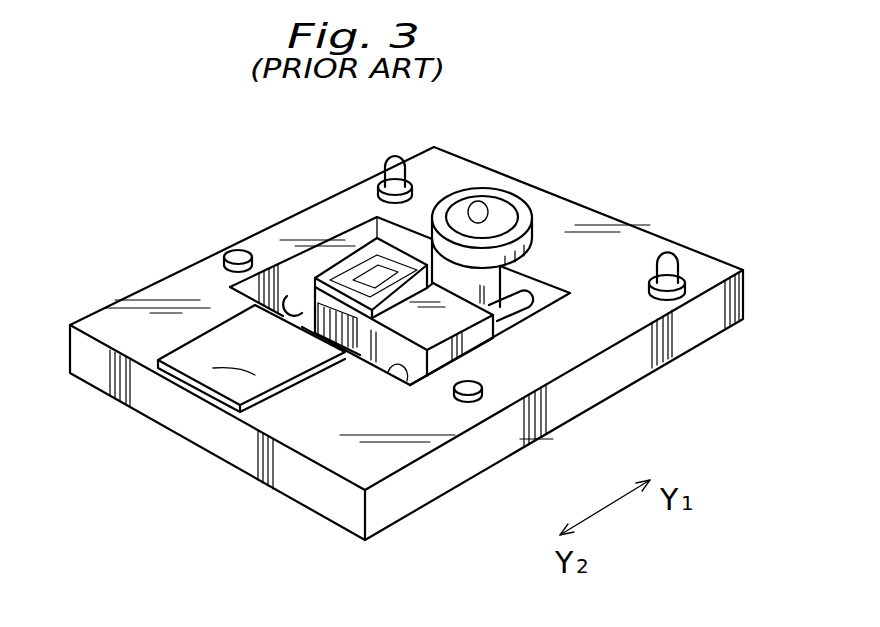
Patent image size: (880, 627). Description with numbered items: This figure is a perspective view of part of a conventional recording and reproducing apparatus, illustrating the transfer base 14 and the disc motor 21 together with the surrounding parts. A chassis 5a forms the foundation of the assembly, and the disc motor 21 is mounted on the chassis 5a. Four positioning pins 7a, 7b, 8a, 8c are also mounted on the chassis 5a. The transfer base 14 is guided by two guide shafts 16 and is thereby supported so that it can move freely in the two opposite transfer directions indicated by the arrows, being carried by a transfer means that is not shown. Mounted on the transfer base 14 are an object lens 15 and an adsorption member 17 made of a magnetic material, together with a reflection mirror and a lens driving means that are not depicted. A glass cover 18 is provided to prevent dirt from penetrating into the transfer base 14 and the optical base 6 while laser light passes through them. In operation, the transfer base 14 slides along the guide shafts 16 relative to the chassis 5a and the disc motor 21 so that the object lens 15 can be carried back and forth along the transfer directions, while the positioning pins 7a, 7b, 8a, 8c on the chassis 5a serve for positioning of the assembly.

The chassis 5a is at (303, 480).
The optical base 6 is at (213, 368).
The positioning pin 7a is at (394, 157).
The positioning pin 7b is at (667, 258).
The positioning pin 8a is at (235, 252).
The positioning pin 8c is at (479, 397).
The transfer base 14 is at (473, 350).
The object lens 15 is at (378, 280).
The guide shafts 16 is at (280, 307).
The adsorption member 17 is at (357, 262).
The glass cover 18 is at (247, 375).
The disc motor 21 is at (522, 212).